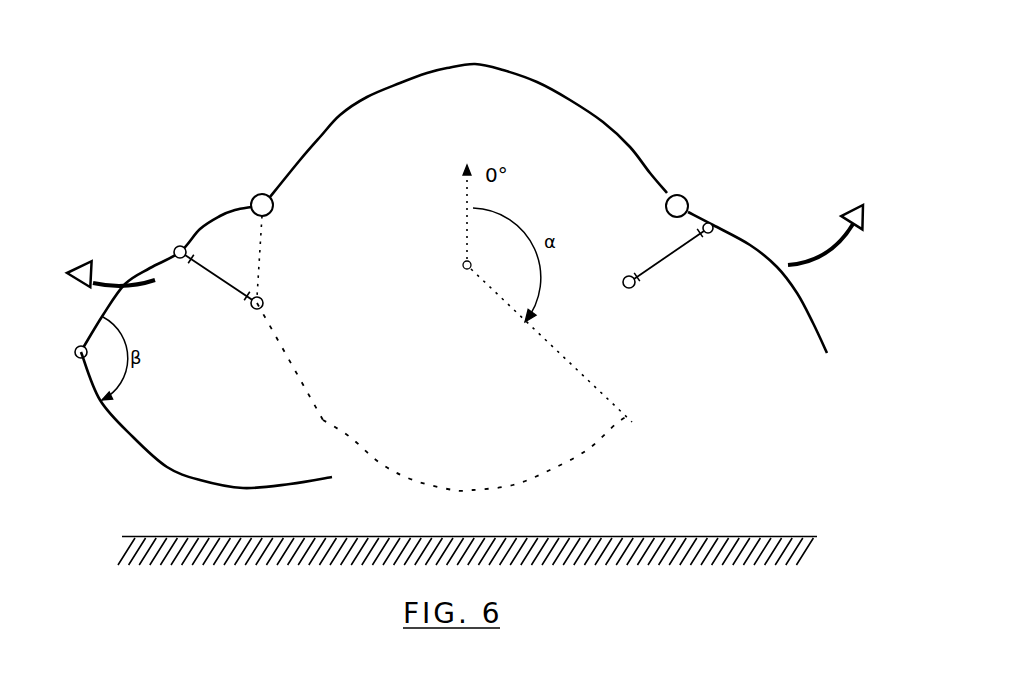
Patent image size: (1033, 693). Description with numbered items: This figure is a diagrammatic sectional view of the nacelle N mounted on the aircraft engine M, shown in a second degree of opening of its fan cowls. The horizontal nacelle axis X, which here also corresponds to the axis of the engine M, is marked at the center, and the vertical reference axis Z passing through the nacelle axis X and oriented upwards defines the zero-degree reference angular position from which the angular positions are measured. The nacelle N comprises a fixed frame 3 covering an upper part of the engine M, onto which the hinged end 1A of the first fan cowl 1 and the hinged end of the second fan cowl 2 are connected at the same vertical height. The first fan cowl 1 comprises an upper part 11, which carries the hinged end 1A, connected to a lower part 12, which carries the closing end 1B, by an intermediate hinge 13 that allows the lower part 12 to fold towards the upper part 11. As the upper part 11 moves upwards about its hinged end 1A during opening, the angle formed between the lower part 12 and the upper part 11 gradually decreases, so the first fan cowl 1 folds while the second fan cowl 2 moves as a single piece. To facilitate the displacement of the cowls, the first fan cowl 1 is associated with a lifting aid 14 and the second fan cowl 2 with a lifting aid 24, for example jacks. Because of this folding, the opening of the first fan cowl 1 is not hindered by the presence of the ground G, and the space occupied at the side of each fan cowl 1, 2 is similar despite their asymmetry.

The first fan cowl 1 is at (232, 212).
The hinged end 1A is at (258, 193).
The closing end 1B is at (676, 195).
The second fan cowl 2 is at (752, 237).
The frame 3 is at (331, 127).
The upper part 11 is at (187, 243).
The lower part 12 is at (270, 485).
The intermediate hinge 13 is at (78, 358).
The lifting aid 14 is at (213, 278).
The lifting aid 24 is at (675, 255).
The nacelle N is at (575, 137).
The nacelle axis X is at (453, 268).
The vertical reference axis Z is at (467, 196).
The aircraft engine M is at (476, 336).
The ground G is at (777, 537).